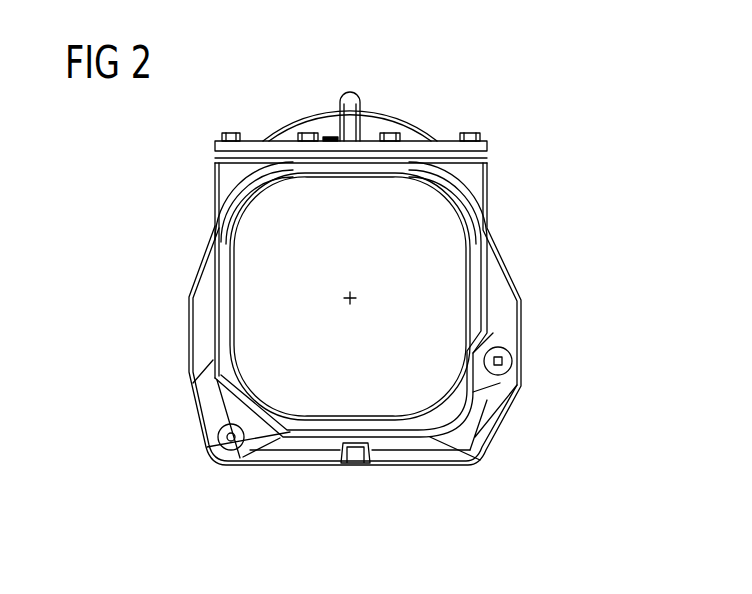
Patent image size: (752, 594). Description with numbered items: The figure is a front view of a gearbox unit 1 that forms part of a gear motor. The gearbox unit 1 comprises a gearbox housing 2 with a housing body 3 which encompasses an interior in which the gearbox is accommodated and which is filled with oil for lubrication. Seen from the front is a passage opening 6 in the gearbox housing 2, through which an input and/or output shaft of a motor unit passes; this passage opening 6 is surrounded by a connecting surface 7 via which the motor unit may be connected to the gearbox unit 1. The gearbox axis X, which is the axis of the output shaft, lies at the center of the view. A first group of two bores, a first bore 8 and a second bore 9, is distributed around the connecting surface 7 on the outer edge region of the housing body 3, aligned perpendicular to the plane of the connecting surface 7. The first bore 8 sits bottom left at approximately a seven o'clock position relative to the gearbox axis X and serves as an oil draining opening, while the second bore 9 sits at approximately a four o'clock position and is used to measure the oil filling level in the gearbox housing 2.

The gearbox unit 1 is at (376, 278).
The gearbox housing 2 is at (193, 190).
The housing body 3 is at (478, 176).
The passage opening 6 is at (445, 270).
The connecting surface 7 is at (228, 240).
The first bore 8 is at (220, 437).
The second bore 9 is at (512, 362).
The gearbox axis X is at (352, 300).